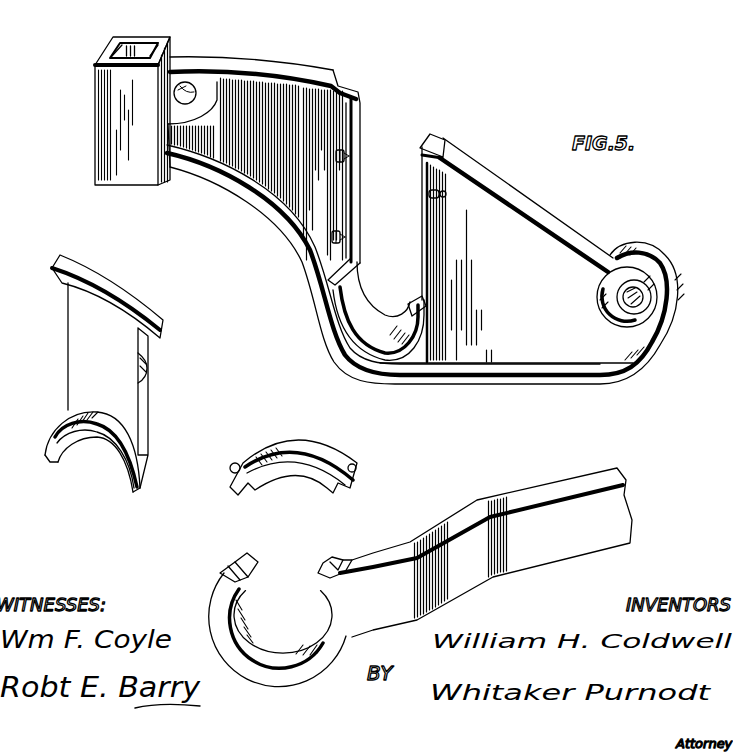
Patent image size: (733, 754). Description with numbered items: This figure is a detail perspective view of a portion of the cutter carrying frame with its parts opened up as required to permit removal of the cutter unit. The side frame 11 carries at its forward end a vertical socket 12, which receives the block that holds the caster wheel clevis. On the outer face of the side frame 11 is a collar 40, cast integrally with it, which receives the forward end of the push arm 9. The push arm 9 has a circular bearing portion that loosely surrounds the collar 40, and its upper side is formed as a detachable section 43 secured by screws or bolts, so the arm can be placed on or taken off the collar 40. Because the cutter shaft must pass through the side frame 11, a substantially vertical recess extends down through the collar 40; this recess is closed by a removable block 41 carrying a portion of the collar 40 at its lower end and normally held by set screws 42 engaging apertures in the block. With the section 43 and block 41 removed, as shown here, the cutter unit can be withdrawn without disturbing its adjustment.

The push arm 9 is at (540, 497).
The side frame 11 is at (243, 58).
The vertical socket 12 is at (96, 112).
The collar 40 is at (347, 332).
The removable block 41 is at (82, 322).
The set screws 42 is at (340, 163).
The detachable section 43 is at (317, 453).